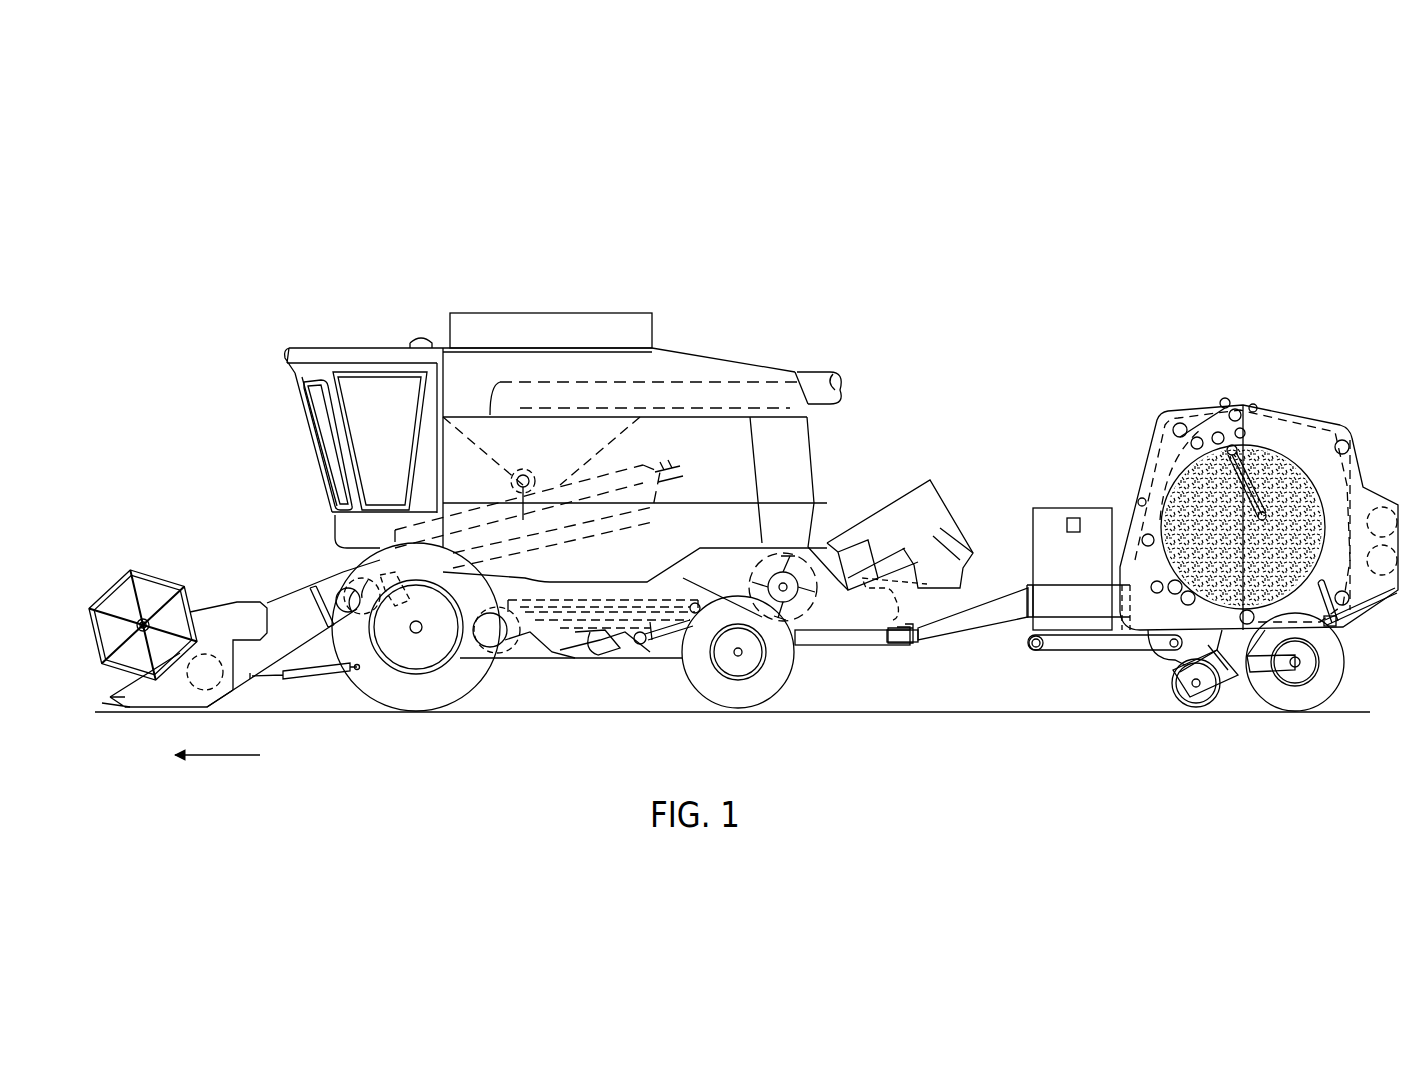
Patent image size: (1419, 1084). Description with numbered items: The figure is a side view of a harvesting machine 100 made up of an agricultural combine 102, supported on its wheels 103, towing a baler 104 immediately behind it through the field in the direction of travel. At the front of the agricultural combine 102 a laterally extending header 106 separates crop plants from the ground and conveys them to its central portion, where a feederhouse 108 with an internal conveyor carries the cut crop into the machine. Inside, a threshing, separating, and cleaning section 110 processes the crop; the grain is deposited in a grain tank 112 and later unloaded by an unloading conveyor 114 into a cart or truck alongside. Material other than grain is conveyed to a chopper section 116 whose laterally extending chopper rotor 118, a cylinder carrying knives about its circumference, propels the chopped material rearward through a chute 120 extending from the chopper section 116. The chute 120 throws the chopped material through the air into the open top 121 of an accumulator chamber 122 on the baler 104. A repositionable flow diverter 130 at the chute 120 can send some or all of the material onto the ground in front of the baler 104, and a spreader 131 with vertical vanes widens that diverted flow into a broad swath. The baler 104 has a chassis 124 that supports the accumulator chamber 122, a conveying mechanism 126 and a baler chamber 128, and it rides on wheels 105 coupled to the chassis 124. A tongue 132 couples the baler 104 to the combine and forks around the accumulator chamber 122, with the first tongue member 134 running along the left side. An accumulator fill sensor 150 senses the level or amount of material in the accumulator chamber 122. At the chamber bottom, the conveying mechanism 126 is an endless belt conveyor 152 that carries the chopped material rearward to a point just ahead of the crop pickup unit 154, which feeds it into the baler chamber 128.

The harvesting machine 100 is at (942, 232).
The agricultural combine 102 is at (487, 295).
The wheels 103 is at (410, 705).
The baler 104 is at (1258, 365).
The wheels 105 is at (1273, 695).
The header 106 is at (160, 545).
The feederhouse 108 is at (277, 607).
The threshing, separating, and cleaning section 110 is at (560, 668).
The grain tank 112 is at (580, 315).
The unloading conveyor 114 is at (818, 375).
The chopper section 116 is at (817, 655).
The chopper rotor 118 is at (790, 570).
The chute 120 is at (912, 495).
The open top 121 is at (1037, 495).
The accumulator chamber 122 is at (1057, 462).
The chassis 124 is at (1157, 650).
The conveying mechanism 126 is at (1058, 653).
The baler chamber 128 is at (1287, 395).
The flow diverter 130 is at (893, 620).
The spreader 131 is at (960, 540).
The tongue 132 is at (957, 635).
The first tongue member 134 is at (1087, 615).
The accumulator fill sensor 150 is at (1077, 518).
The endless belt conveyor 152 is at (1027, 657).
The crop pickup unit 154 is at (1173, 695).